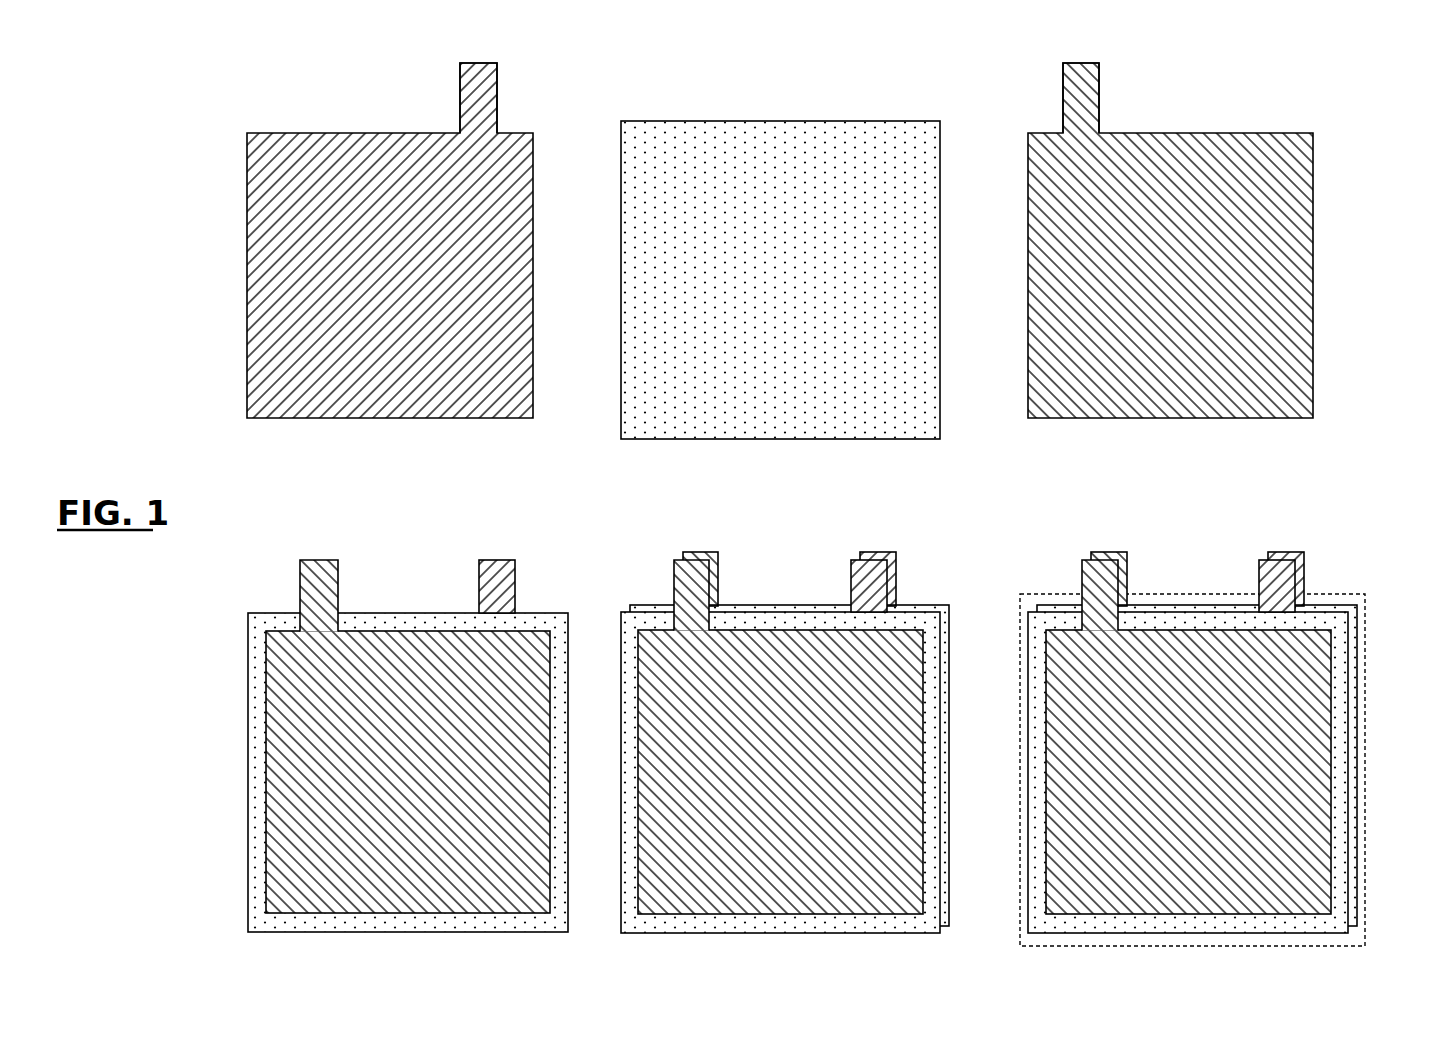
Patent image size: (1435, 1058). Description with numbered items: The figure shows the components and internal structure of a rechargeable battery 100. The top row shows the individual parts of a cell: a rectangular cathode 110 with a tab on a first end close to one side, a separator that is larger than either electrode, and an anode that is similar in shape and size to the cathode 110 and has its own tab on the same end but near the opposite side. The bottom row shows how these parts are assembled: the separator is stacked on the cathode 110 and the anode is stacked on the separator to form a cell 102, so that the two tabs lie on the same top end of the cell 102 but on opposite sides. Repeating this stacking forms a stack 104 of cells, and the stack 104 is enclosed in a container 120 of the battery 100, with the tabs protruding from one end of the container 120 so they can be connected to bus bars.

The rechargeable battery 100 is at (1221, 728).
The cell 102 is at (378, 724).
The stack 104 is at (795, 722).
The cathode 110 is at (247, 187).
The container 120 is at (1368, 768).